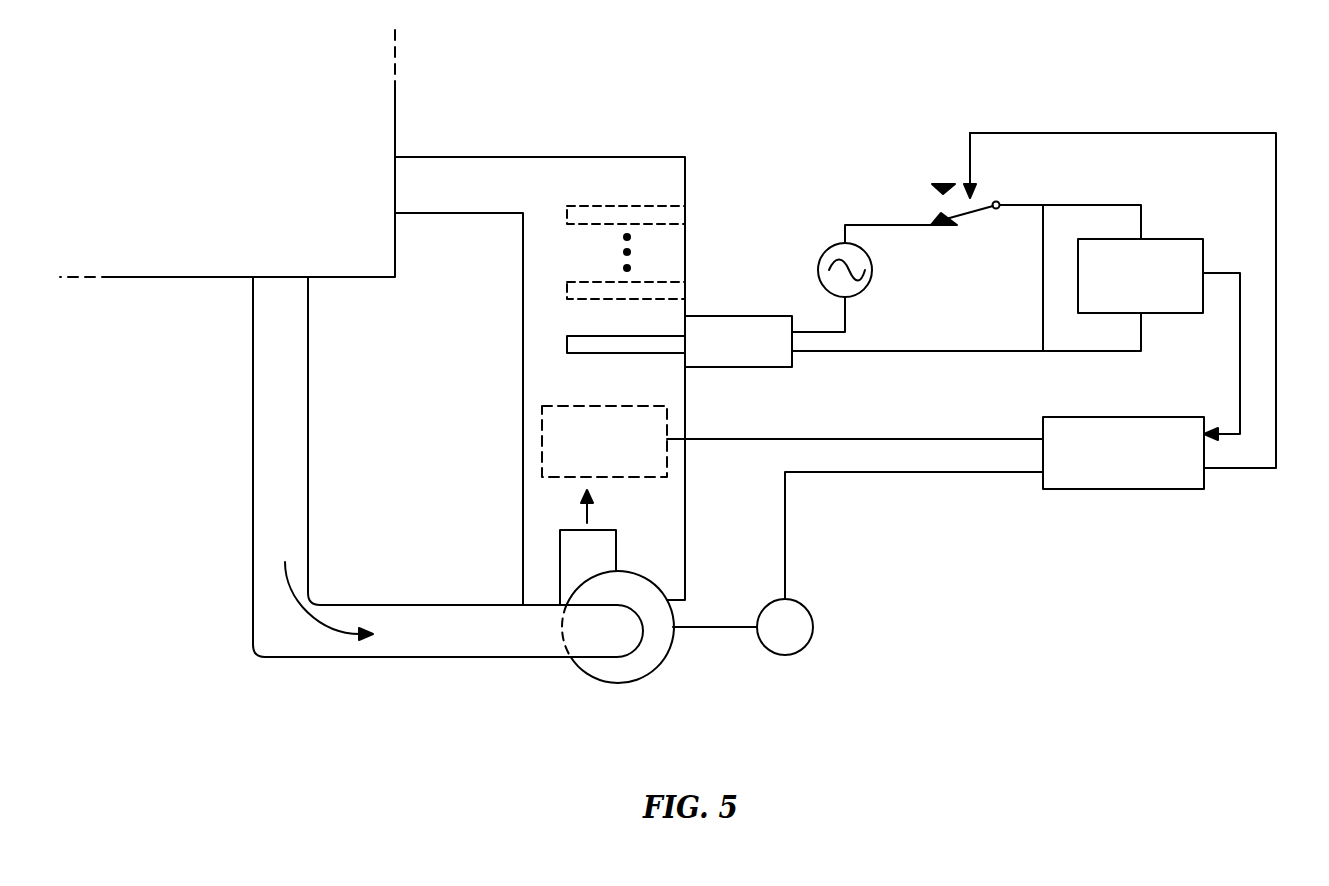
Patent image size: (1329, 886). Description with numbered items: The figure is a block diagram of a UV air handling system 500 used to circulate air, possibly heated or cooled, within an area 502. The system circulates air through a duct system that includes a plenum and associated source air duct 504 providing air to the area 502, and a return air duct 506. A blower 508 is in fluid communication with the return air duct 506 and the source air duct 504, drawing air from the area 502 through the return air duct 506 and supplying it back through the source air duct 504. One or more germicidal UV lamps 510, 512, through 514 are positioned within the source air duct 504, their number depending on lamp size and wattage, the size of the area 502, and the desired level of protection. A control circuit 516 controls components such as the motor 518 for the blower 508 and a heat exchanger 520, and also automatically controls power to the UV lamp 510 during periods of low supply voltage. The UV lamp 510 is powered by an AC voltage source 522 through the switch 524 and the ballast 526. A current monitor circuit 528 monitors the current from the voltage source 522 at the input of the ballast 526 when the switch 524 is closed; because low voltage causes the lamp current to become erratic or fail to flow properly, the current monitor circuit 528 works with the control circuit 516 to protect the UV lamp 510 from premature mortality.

The UV air handling system 500 is at (806, 119).
The area 502 is at (307, 199).
The source air duct 504 is at (657, 157).
The return air duct 506 is at (310, 402).
The blower 508 is at (618, 571).
The UV lamp 510 is at (608, 336).
The UV lamp 512 is at (608, 282).
The UV lamp 514 is at (608, 206).
The control circuit 516 is at (1083, 417).
The motor 518 is at (805, 600).
The heat exchanger 520 is at (608, 406).
The AC voltage source 522 is at (872, 260).
The switch 524 is at (921, 198).
The ballast 526 is at (720, 316).
The current monitor circuit 528 is at (1167, 239).